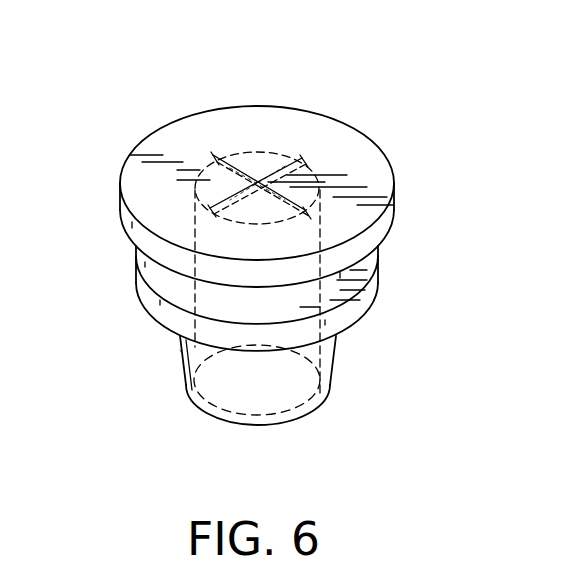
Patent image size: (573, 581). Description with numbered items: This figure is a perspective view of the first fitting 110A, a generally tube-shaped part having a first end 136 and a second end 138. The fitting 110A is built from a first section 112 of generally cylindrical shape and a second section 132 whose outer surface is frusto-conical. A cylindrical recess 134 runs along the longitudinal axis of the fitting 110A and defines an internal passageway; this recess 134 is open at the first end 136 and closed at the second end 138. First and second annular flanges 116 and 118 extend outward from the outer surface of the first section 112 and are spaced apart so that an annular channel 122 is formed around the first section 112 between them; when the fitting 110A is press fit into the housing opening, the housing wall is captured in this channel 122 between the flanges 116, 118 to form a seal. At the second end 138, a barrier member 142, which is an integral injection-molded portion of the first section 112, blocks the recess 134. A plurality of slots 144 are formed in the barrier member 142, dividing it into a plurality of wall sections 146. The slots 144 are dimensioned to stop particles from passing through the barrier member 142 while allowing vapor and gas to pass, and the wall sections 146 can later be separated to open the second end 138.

The first fitting 110A is at (178, 362).
The first section 112 is at (180, 283).
The first annular flange 116 is at (392, 230).
The second annular flange 118 is at (378, 302).
The annular channel 122 is at (378, 262).
The second section 132 is at (337, 368).
The cylindrical recess 134 is at (273, 377).
The first end 136 is at (235, 425).
The second end 138 is at (260, 138).
The barrier member 142 is at (217, 182).
The slots 144 is at (306, 177).
The wall sections 146 is at (253, 163).